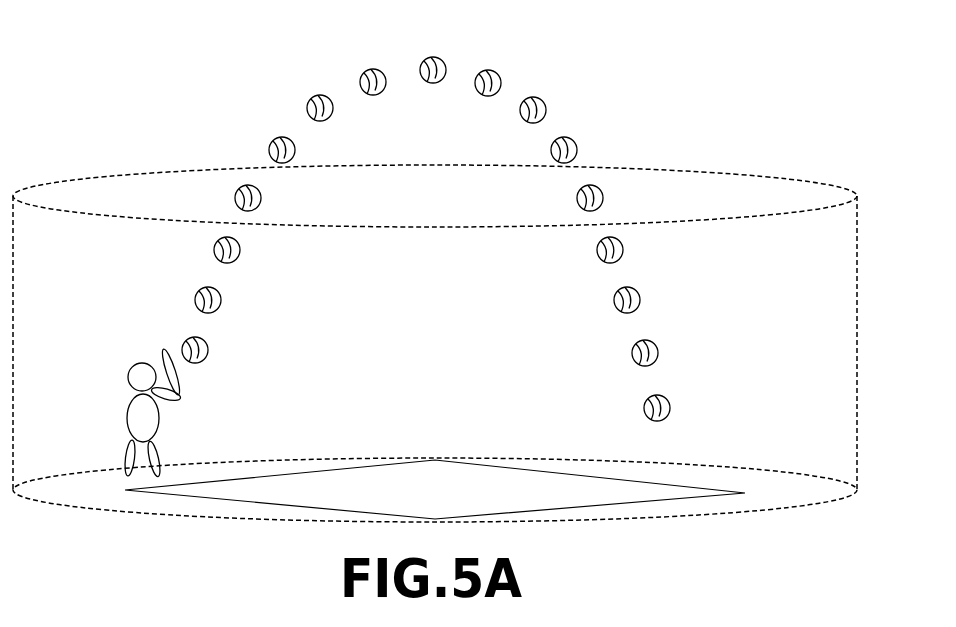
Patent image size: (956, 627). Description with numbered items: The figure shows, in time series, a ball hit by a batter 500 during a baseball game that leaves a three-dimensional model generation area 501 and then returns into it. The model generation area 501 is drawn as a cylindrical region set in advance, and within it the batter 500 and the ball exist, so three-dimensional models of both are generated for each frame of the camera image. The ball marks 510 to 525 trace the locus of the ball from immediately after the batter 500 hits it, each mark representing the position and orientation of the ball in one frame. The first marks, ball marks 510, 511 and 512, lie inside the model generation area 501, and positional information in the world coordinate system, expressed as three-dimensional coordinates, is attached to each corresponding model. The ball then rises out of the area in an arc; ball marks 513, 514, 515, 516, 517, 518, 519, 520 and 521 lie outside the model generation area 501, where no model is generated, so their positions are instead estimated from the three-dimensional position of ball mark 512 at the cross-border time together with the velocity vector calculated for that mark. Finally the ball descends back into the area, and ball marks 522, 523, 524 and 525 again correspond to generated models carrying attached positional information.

The batter 500 is at (127, 378).
The 3D model generation area 501 is at (780, 176).
The ball mark 510 is at (183, 345).
The ball mark 511 is at (196, 300).
The ball mark 512 is at (214, 252).
The ball mark 513 is at (235, 198).
The ball mark 514 is at (269, 145).
The ball mark 515 is at (307, 105).
The ball mark 516 is at (363, 72).
The ball mark 517 is at (427, 58).
The ball mark 518 is at (490, 70).
The ball mark 519 is at (543, 100).
The ball mark 520 is at (577, 144).
The ball mark 521 is at (604, 198).
The ball mark 522 is at (622, 255).
The ball mark 523 is at (641, 300).
The ball mark 524 is at (659, 352).
The ball mark 525 is at (671, 407).